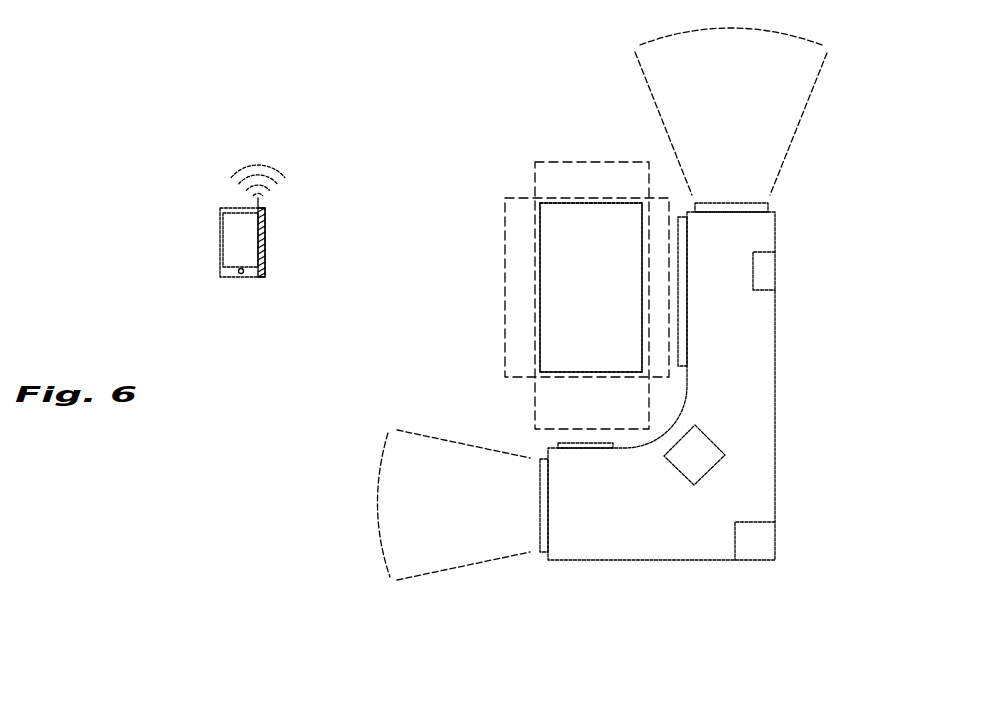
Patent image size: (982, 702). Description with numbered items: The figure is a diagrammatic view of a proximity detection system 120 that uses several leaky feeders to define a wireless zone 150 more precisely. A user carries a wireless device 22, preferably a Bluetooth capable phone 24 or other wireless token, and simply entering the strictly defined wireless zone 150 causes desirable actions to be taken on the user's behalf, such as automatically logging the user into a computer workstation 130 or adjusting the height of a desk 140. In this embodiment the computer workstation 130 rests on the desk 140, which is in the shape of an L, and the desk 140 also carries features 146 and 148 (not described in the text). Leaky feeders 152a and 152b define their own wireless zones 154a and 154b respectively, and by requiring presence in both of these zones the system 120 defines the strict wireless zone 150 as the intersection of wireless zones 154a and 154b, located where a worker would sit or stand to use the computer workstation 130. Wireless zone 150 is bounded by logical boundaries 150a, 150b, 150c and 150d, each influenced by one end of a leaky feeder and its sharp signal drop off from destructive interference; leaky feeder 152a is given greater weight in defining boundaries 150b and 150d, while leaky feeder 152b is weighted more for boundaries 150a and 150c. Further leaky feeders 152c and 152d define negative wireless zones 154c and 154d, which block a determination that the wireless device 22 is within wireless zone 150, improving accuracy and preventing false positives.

The proximity detection system 120 is at (188, 86).
The wireless device 22 is at (227, 208).
The Bluetooth capable phone 24 is at (265, 238).
The desk 140 is at (747, 358).
The power port 146 is at (762, 280).
The control button 148 is at (752, 543).
The computer workstation 130 is at (698, 453).
The wireless zone 150 is at (572, 293).
The logical boundary 150a is at (565, 208).
The logical boundary 150b is at (537, 222).
The logical boundary 150c is at (553, 368).
The logical boundary 150d is at (640, 230).
The leaky feeder 152a is at (552, 443).
The leaky feeder 152b is at (678, 200).
The leaky feeder 152c is at (745, 203).
The leaky feeder 152d is at (538, 553).
The wireless zone 154a is at (535, 162).
The wireless zone 154b is at (505, 340).
The negative wireless zone 154c is at (731, 111).
The negative wireless zone 154d is at (453, 505).